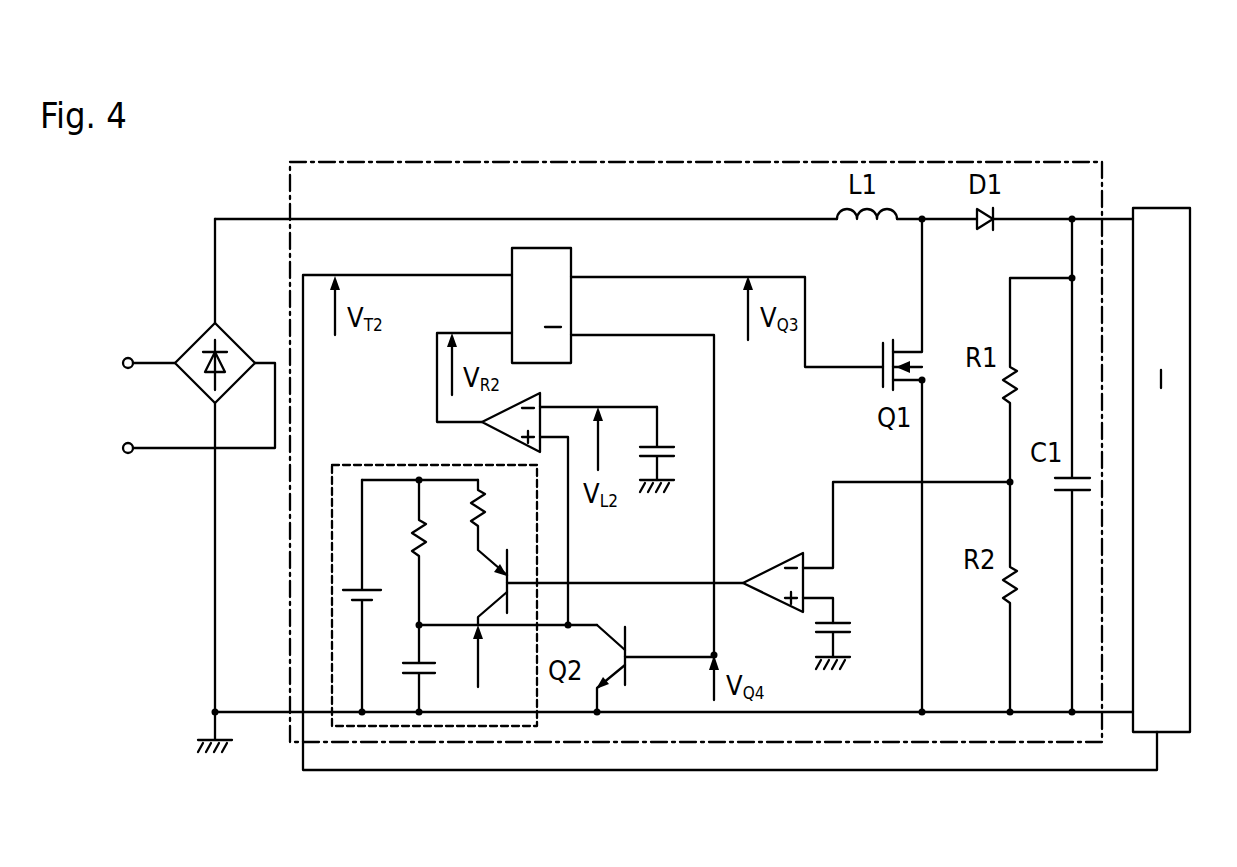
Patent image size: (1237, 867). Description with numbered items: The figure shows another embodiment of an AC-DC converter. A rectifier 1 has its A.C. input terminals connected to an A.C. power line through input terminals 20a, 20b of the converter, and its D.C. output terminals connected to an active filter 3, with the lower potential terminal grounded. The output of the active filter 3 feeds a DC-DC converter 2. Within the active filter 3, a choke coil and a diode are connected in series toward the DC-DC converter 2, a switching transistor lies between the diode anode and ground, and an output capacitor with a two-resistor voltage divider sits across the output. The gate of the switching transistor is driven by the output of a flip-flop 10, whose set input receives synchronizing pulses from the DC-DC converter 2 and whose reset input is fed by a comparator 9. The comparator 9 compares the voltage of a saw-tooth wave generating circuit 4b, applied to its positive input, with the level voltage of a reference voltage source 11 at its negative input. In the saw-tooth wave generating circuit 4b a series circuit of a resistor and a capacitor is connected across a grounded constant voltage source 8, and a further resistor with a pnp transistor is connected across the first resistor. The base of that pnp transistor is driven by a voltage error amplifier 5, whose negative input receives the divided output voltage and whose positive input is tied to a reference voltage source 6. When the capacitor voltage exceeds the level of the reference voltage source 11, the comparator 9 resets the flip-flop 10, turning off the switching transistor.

The rectifier 1 is at (198, 342).
The DC-DC converter 2 is at (1165, 216).
The active filter 3 is at (1080, 186).
The saw-tooth wave generating circuit 4b is at (355, 465).
The voltage error amplifier 5 is at (771, 574).
The reference voltage source 6 is at (811, 629).
The constant voltage source 8 is at (367, 596).
The comparator 9 is at (541, 398).
The flip-flop 10 is at (512, 252).
The reference voltage source 11 is at (666, 444).
The input terminal 20a is at (128, 357).
The input terminal 20b is at (127, 454).